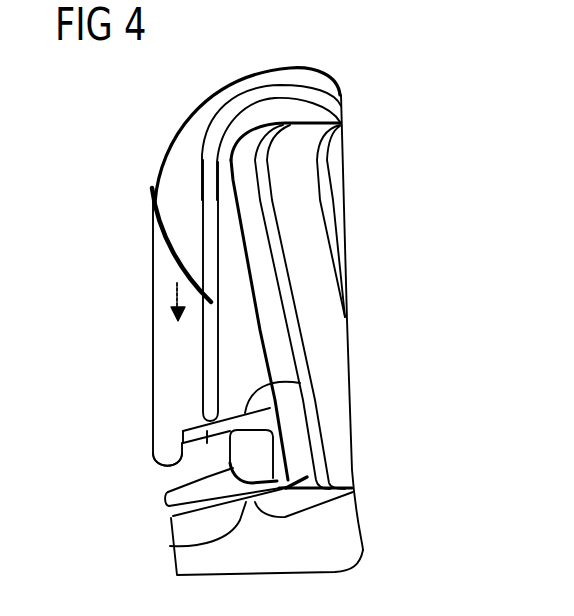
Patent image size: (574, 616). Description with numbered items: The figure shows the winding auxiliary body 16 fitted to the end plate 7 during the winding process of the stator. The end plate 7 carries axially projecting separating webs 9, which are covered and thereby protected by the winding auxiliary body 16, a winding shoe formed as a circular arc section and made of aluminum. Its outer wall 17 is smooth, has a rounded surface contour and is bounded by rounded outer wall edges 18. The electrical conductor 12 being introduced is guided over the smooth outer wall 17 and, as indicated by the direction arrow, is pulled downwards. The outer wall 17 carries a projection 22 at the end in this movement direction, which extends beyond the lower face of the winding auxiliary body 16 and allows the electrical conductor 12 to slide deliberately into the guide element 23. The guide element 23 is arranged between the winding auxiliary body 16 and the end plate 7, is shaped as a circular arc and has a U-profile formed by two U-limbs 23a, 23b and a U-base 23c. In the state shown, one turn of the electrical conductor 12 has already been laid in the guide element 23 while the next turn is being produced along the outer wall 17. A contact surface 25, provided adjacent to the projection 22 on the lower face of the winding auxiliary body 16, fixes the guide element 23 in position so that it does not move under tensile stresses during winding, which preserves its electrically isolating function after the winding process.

The end plate 7 is at (350, 317).
The separating webs 9 is at (253, 158).
The electrical conductor 12 is at (163, 236).
The winding auxiliary body 16 is at (231, 84).
The outer wall 17 is at (174, 152).
The outer wall edges 18 is at (218, 398).
The projection 22 is at (153, 450).
The guide element 23 is at (170, 546).
The U-limb 23a is at (300, 383).
The U-limb 23b is at (353, 492).
The U-base 23c is at (273, 431).
The contact surface 25 is at (183, 443).